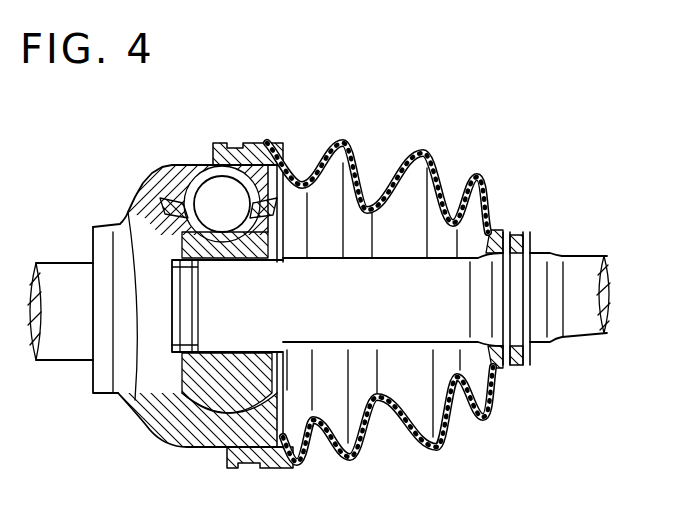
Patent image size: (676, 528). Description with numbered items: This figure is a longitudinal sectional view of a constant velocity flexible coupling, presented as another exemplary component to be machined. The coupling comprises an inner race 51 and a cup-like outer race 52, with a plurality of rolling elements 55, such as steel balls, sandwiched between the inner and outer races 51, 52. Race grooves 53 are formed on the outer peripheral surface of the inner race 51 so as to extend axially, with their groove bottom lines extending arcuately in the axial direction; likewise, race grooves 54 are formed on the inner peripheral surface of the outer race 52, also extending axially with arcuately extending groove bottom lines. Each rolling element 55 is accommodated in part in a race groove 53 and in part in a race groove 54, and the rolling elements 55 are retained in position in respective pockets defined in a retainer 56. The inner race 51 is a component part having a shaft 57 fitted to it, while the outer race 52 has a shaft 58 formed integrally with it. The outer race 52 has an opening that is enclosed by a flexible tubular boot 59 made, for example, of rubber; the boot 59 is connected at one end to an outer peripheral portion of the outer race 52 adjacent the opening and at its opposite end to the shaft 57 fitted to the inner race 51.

The inner race 51 is at (220, 383).
The outer race 52 is at (167, 173).
The race grooves 53 is at (290, 228).
The race grooves 54 is at (278, 158).
The rolling elements 55 is at (222, 190).
The retainer 56 is at (287, 430).
The shaft 57 is at (398, 330).
The shaft 58 is at (65, 340).
The flexible tubular boot 59 is at (446, 182).